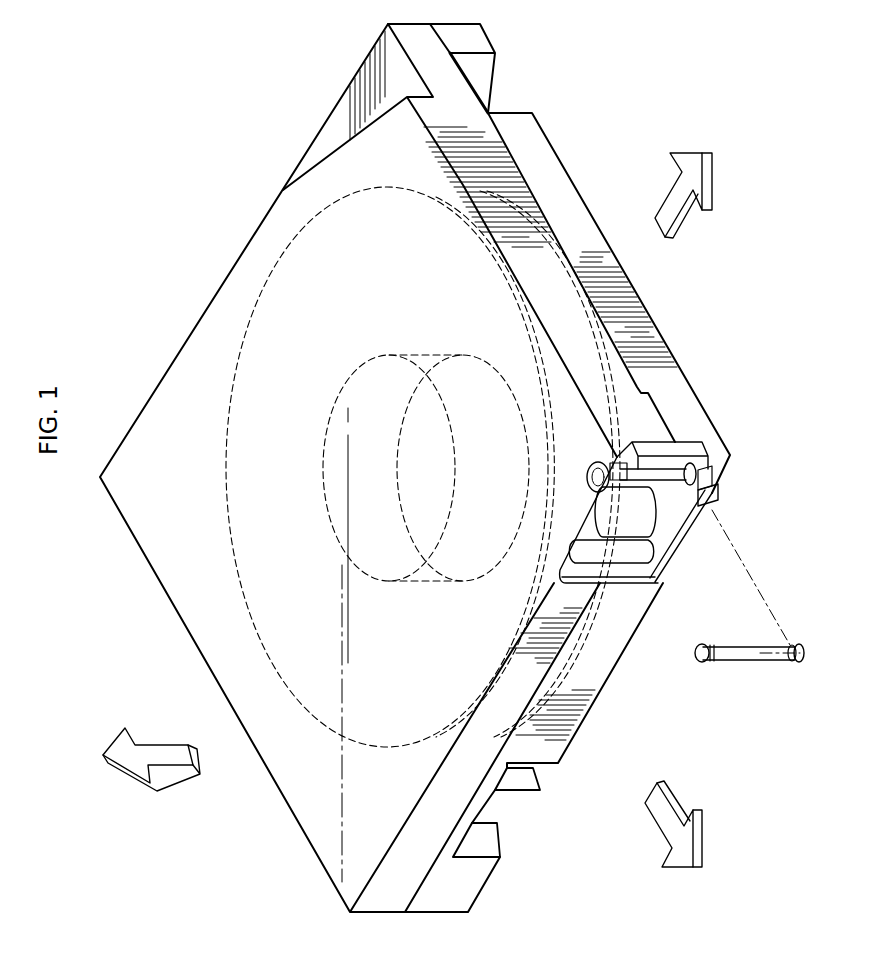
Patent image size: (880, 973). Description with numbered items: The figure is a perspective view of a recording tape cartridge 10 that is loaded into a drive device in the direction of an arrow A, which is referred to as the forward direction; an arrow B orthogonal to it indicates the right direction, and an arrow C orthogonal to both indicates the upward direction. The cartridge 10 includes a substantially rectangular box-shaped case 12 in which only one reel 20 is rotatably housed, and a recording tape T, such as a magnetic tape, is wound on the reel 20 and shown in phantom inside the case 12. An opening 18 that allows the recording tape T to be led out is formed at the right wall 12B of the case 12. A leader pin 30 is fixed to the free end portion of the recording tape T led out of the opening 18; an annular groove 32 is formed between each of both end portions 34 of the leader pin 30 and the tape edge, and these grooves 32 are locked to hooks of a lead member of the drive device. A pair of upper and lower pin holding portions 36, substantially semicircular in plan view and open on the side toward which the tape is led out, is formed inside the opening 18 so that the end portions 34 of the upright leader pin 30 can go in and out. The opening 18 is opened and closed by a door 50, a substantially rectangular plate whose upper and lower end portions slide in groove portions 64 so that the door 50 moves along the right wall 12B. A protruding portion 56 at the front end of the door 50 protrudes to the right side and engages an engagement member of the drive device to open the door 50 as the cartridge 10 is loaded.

The recording tape cartridge 10 is at (190, 252).
The case 12 is at (326, 133).
The right wall 12B is at (522, 806).
The opening 18 is at (655, 584).
The reel 20 is at (230, 470).
The leader pin 30 is at (648, 472).
The annular groove 32 is at (696, 465).
The end portions 34 is at (712, 477).
The pin holding portion 36 is at (708, 498).
The door 50 is at (612, 613).
The protruding portion 56 is at (628, 566).
The groove portions 64 is at (588, 472).
The recording tape T is at (746, 582).
The arrow A is at (665, 202).
The arrow B is at (663, 814).
The arrow C is at (165, 755).